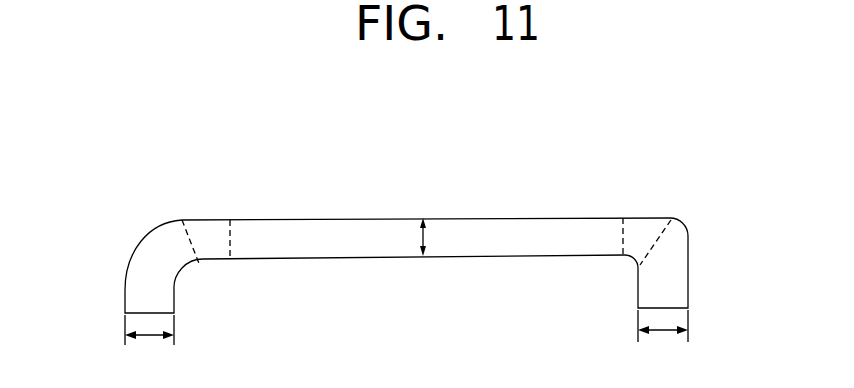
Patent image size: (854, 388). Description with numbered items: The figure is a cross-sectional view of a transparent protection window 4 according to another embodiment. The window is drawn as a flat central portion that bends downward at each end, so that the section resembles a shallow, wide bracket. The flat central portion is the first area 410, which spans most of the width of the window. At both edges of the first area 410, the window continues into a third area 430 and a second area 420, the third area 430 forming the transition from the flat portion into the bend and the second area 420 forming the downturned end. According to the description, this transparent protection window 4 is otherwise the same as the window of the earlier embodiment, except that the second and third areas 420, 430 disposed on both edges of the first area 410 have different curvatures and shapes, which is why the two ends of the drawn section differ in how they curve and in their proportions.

The transparent protection window 4 is at (727, 158).
The first area 410 is at (332, 237).
The second area 420 is at (137, 298).
The third area 430 is at (212, 228).